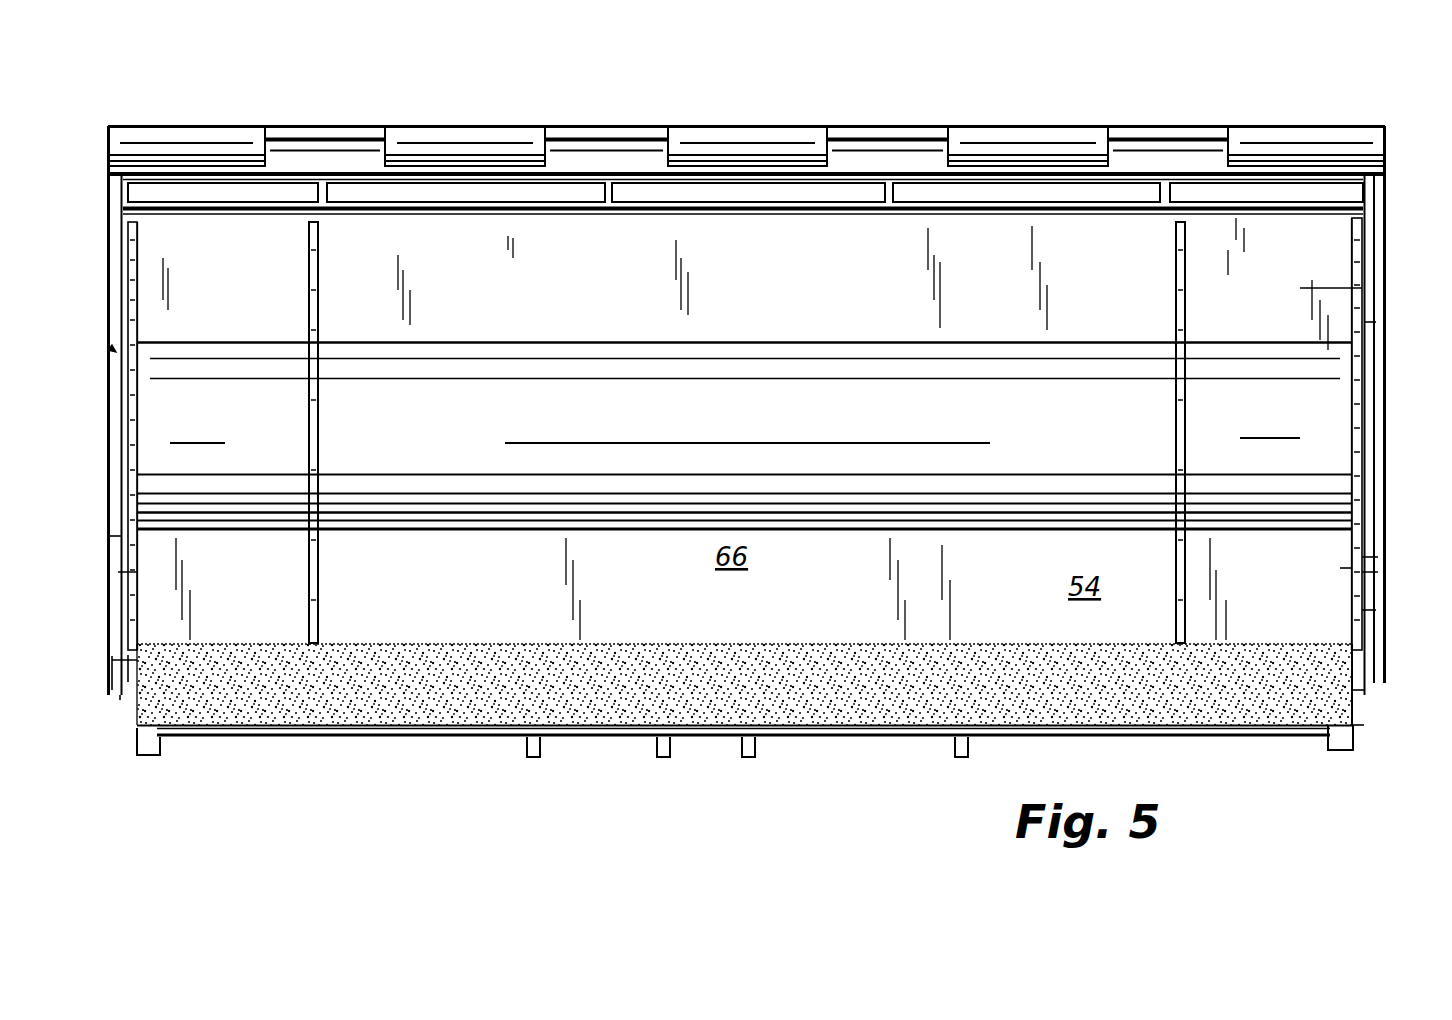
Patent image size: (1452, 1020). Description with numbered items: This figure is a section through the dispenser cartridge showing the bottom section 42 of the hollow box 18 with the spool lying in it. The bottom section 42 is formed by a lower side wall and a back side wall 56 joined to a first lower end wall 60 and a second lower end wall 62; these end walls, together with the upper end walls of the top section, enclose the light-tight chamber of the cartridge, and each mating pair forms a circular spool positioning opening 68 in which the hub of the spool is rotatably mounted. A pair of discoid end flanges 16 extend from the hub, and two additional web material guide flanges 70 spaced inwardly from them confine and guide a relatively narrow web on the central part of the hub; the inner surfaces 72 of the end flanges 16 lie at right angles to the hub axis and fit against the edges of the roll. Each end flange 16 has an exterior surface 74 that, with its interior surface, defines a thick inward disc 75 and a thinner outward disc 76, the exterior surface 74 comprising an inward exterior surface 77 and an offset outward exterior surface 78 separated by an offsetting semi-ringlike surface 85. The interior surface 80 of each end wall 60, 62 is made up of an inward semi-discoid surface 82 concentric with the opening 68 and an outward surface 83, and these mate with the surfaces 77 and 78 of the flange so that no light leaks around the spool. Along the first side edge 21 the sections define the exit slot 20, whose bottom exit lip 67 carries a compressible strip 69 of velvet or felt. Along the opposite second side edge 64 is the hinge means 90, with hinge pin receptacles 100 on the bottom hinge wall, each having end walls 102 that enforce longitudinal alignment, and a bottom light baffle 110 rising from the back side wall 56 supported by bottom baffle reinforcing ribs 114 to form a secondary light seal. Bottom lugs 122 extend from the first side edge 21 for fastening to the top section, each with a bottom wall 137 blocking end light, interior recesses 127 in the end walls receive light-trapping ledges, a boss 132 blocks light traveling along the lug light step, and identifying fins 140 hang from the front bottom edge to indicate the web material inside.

The discoid end flange 16 is at (138, 298).
The hollow box 18 is at (1388, 206).
The exit slot 20 is at (1115, 737).
The first side edge 21 is at (1366, 722).
The bottom section 42 is at (1032, 122).
The back side wall 56 is at (958, 226).
The first lower end wall 60 is at (106, 193).
The second lower end wall 62 is at (1387, 240).
The second side edge 64 is at (1392, 124).
The bottom exit lip 67 is at (1345, 694).
The spool positioning opening 68 is at (112, 346).
The compressible strip 69 is at (1245, 705).
The web material guide flange 70 is at (319, 270).
The inner surface 72 is at (1300, 290).
The exterior surface 74 is at (126, 258).
The inward disc 75 is at (1377, 323).
The outward disc 76 is at (1364, 266).
The inward exterior surface 77 is at (1380, 558).
The outward exterior surface 78 is at (1378, 611).
The interior surface 80 is at (132, 222).
The inward semi-discoid surface 82 is at (138, 326).
The outward surface 83 is at (1350, 570).
The offsetting semi-ringlike surface 85 is at (1378, 574).
The hinge means 90 is at (158, 126).
The hinge pin receptacle 100 is at (186, 135).
The end wall 102 is at (1215, 154).
The bottom light baffle 110 is at (695, 213).
The bottom baffle reinforcing rib 114 is at (600, 203).
The bottom lug 122 is at (150, 757).
The interior recess 127 is at (118, 223).
The boss 132 is at (110, 682).
The bottom wall 137 is at (120, 700).
The identifying fin 140 is at (668, 758).